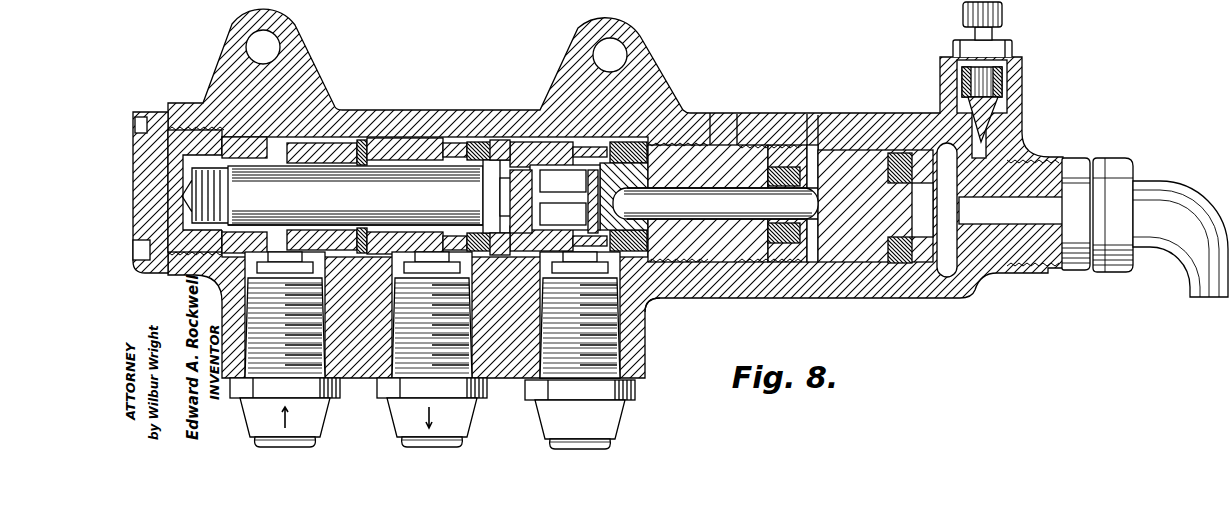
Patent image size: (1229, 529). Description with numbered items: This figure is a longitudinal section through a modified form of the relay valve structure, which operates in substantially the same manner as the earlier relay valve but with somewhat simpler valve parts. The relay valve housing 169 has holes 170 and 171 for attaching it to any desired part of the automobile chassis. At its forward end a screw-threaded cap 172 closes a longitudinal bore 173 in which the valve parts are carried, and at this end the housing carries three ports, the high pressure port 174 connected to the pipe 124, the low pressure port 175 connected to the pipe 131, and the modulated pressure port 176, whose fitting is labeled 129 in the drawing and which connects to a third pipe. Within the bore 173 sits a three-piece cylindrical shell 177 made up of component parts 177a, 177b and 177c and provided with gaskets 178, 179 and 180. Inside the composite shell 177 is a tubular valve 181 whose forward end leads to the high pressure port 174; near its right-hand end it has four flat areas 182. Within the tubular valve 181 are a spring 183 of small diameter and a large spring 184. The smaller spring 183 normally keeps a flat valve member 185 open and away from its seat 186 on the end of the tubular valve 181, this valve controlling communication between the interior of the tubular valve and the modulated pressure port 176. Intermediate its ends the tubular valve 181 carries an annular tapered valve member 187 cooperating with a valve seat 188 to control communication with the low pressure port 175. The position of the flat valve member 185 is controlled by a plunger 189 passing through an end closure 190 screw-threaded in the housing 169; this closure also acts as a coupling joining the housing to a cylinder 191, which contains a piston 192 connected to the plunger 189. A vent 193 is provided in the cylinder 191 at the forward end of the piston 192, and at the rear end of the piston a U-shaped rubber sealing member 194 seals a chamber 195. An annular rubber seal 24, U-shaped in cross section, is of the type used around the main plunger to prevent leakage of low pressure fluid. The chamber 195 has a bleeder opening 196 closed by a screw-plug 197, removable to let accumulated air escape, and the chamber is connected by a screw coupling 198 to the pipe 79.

The annular rubber seal 24 is at (782, 250).
The pipe 79 is at (1170, 193).
The pipe 124 is at (323, 428).
The medium pressure fitting 129 is at (638, 440).
The pipe 131 is at (470, 438).
The relay valve housing 169 is at (404, 108).
The hole 170 is at (281, 44).
The hole 171 is at (628, 50).
The screw-threaded cap 172 is at (160, 105).
The longitudinal bore 173 is at (330, 105).
The high pressure port 174 is at (318, 300).
The low pressure port 175 is at (465, 300).
The modulated pressure port 176 is at (645, 326).
The three-piece cylindrical shell 177 is at (468, 142).
The shell component part 177a is at (534, 142).
The shell component part 177b is at (450, 140).
The shell component part 177c is at (336, 148).
The gasket 178 is at (500, 142).
The gasket 179 is at (394, 150).
The gasket 180 is at (230, 140).
The tubular valve 181 is at (333, 215).
The flat areas 182 is at (563, 181).
The small spring 183 is at (140, 118).
The large spring 184 is at (218, 187).
The flat valve member 185 is at (651, 297).
The valve seat 186 is at (598, 218).
The annular tapered valve member 187 is at (500, 250).
The valve seat 188 is at (505, 255).
The plunger 189 is at (693, 137).
The end closure 190 is at (764, 142).
The cylinder 191 is at (873, 130).
The piston 192 is at (840, 282).
The vent 193 is at (813, 126).
The U-shaped rubber sealing member 194 is at (897, 290).
The chamber 195 is at (950, 268).
The bleeder opening 196 is at (985, 148).
The screw-plug 197 is at (1003, 15).
The screw coupling 198 is at (1064, 162).